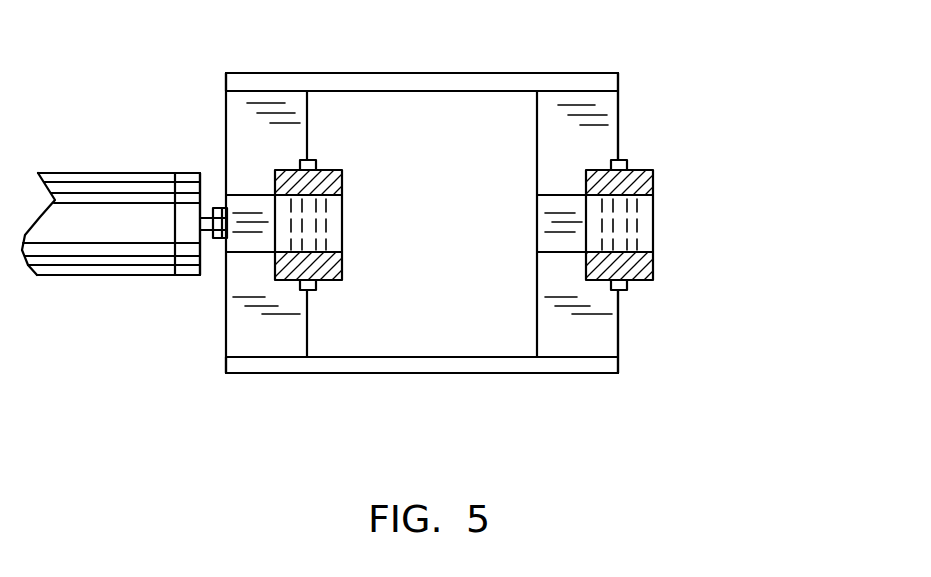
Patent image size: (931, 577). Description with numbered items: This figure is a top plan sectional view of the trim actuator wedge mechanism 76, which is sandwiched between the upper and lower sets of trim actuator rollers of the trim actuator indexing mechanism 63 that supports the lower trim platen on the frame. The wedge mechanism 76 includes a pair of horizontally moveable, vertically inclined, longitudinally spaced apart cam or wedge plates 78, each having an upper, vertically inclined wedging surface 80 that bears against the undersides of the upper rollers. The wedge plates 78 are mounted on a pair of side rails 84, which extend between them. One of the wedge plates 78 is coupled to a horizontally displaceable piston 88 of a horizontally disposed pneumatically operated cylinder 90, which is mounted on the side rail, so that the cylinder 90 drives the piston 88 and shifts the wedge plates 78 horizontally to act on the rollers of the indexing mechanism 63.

The trim actuator indexing mechanism 63 is at (103, 342).
The trim actuator wedge mechanism 76 is at (662, 335).
The wedge plates 78 is at (297, 105).
The wedging surfaces 80 is at (245, 240).
The side rails 84 is at (390, 73).
The piston 88 is at (215, 240).
The pneumatically operated cylinder 90 is at (100, 175).